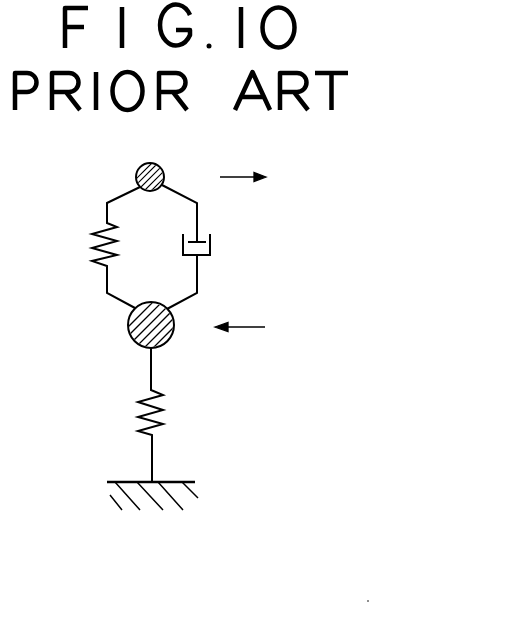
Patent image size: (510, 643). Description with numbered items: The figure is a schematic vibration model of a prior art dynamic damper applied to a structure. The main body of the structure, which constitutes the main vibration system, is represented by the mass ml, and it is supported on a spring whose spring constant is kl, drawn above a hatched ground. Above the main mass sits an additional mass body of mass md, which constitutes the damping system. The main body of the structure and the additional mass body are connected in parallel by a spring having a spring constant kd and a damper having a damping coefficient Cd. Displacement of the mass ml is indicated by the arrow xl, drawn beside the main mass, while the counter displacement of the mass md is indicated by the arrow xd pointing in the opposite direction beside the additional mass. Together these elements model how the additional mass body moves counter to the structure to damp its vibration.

The mass of additional mass body md is at (156, 164).
The counter displacement arrow xd is at (262, 177).
The spring constant of connecting spring kd is at (93, 247).
The damping coefficient of damper Cd is at (206, 247).
The mass of main body of structure ml is at (136, 328).
The displacement arrow xl is at (240, 342).
The spring constant of main body kl is at (127, 415).